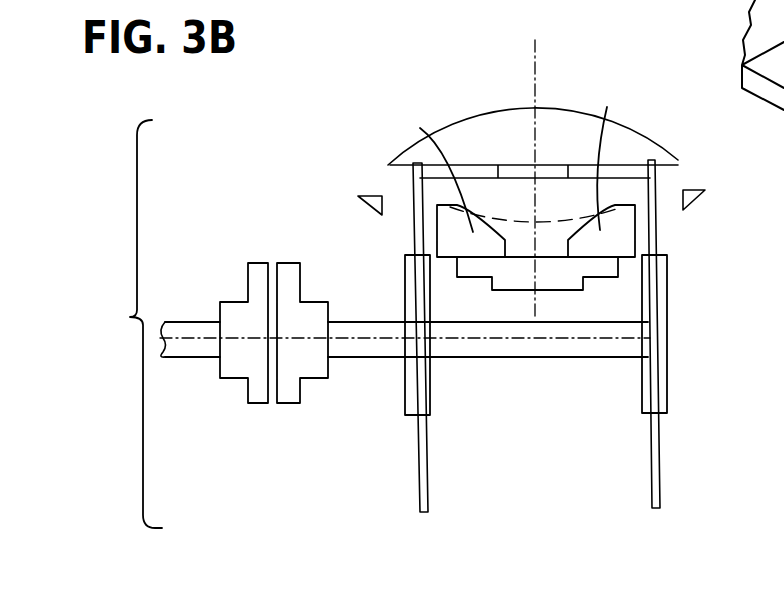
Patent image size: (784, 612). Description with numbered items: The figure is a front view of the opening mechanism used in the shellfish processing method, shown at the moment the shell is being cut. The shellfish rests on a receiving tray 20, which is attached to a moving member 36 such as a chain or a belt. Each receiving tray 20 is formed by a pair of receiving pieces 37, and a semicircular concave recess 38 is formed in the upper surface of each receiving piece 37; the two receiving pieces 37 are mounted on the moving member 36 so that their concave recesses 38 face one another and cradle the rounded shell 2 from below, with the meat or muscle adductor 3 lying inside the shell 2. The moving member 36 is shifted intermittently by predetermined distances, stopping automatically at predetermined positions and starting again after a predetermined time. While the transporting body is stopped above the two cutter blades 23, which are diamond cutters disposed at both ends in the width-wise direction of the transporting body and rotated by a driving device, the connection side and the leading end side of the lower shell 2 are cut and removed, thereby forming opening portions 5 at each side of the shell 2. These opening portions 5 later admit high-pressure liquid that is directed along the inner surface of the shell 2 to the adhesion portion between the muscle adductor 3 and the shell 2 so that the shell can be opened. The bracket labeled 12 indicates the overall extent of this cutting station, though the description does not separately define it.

The shell 2 is at (643, 147).
The muscle adductor 3 is at (544, 165).
The opening portion 5 is at (410, 176).
The drive shaft unit 12 is at (130, 317).
The receiving tray 20 is at (542, 236).
The cutter blade 23 is at (418, 441).
The moving member 36 is at (513, 292).
The receiving piece 37 is at (437, 237).
The concave recess 38 is at (510, 155).